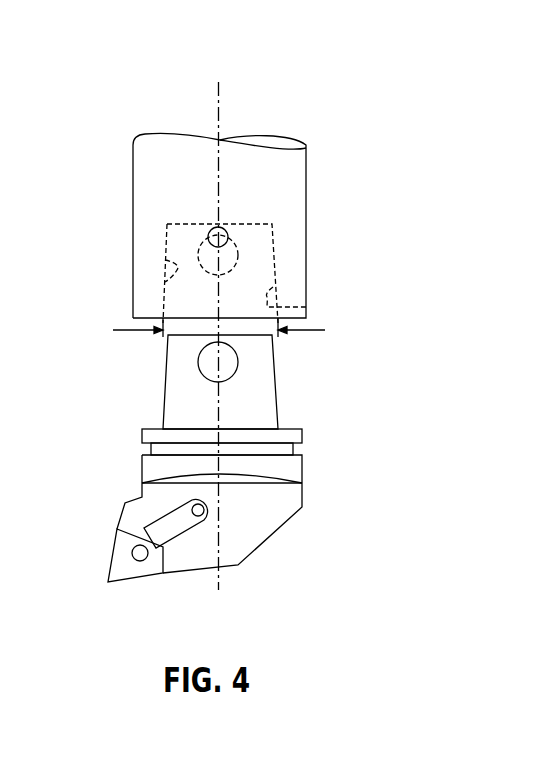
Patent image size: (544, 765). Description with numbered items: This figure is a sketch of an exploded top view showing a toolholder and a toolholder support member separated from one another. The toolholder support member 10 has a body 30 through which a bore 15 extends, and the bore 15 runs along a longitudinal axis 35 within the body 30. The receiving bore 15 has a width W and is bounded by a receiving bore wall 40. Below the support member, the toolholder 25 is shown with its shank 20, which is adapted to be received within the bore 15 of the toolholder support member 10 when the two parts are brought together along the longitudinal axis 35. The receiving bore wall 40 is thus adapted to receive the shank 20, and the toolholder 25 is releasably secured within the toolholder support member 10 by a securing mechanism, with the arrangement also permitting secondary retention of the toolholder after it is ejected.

The toolholder support member 10 is at (243, 228).
The bore 15 is at (306, 307).
The shank 20 is at (275, 390).
The toolholder 25 is at (263, 510).
The body 30 is at (287, 185).
The longitudinal axis 35 is at (218, 97).
The receiving bore wall 40 is at (165, 260).
The width W is at (313, 328).